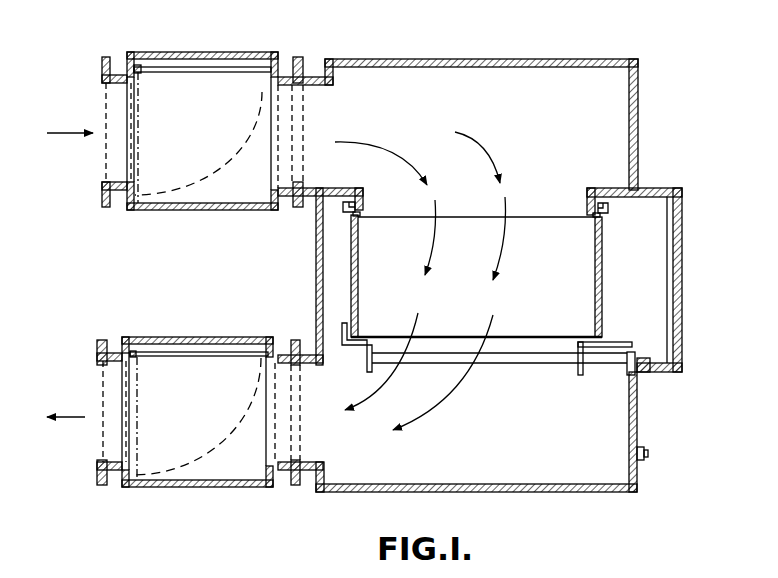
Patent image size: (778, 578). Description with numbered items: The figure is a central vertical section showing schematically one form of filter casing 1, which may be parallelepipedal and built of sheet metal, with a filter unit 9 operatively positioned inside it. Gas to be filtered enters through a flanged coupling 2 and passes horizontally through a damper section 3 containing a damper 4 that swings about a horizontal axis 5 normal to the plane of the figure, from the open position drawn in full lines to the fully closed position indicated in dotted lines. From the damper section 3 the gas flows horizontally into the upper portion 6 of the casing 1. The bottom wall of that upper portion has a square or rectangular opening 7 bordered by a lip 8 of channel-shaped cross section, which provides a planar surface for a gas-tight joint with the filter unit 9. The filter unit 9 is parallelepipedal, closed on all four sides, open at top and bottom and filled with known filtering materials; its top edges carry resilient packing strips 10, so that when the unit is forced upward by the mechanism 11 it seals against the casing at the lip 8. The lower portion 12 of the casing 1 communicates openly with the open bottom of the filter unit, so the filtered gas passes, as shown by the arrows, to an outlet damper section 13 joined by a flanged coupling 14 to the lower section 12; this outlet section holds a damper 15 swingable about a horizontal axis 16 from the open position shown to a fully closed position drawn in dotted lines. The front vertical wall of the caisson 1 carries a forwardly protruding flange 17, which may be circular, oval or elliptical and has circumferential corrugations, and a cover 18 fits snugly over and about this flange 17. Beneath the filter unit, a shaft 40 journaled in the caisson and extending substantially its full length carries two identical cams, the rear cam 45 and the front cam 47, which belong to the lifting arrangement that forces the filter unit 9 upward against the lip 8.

The filter casing 1 is at (645, 73).
The flanged coupling 2 is at (103, 78).
The damper section 3 is at (232, 192).
The damper 4 is at (173, 72).
The horizontal axis 5 is at (139, 65).
The upper portion of casing 6 is at (638, 128).
The opening 7 is at (597, 210).
The lip 8 is at (347, 209).
The filter unit 9 is at (536, 299).
The resilient packing strips 10 is at (358, 216).
The mechanism 11 is at (557, 366).
The lower portion of casing 12 is at (582, 492).
The outlet damper section 13 is at (222, 467).
The flanged coupling 14 is at (294, 418).
The damper 15 is at (200, 356).
The horizontal axis 16 is at (135, 355).
The flange 17 is at (654, 198).
The cover 18 is at (676, 326).
The shaft 40 is at (510, 362).
The rear cam 45 is at (368, 366).
The front cam 47 is at (581, 376).